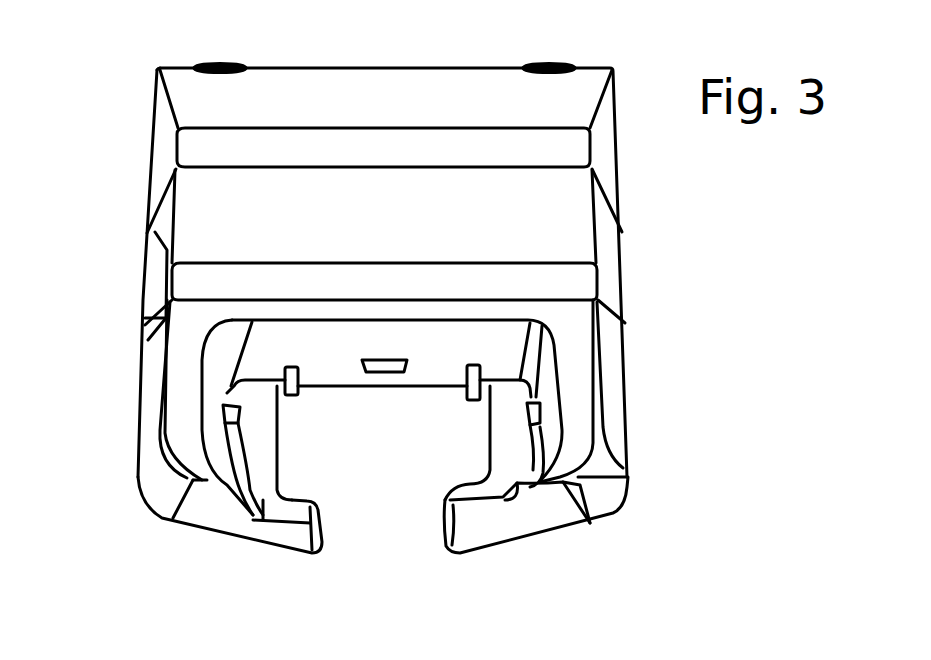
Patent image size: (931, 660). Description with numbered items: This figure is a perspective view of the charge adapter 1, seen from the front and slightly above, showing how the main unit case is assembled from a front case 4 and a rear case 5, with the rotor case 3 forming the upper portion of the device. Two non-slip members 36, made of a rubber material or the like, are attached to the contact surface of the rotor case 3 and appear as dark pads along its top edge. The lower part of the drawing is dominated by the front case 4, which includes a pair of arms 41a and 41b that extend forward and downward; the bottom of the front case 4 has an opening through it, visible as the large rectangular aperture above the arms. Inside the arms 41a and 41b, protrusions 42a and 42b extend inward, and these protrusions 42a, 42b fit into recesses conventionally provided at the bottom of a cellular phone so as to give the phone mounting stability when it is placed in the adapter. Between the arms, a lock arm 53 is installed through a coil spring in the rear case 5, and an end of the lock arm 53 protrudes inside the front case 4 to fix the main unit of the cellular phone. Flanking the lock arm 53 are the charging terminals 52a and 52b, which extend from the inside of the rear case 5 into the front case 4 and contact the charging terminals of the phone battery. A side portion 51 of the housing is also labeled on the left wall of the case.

The charge adapter 1 is at (112, 186).
The rotor case 3 is at (170, 90).
The front case 4 is at (617, 351).
The rear case 5 is at (612, 257).
The non-slip members 36 is at (226, 64).
The arm 41a is at (535, 525).
The arm 41b is at (262, 543).
The protrusion 42a is at (525, 410).
The protrusion 42b is at (240, 422).
The side flap 51 is at (153, 274).
The charging terminal 52a is at (478, 400).
The charging terminal 52b is at (298, 392).
The lock arm 53 is at (385, 373).